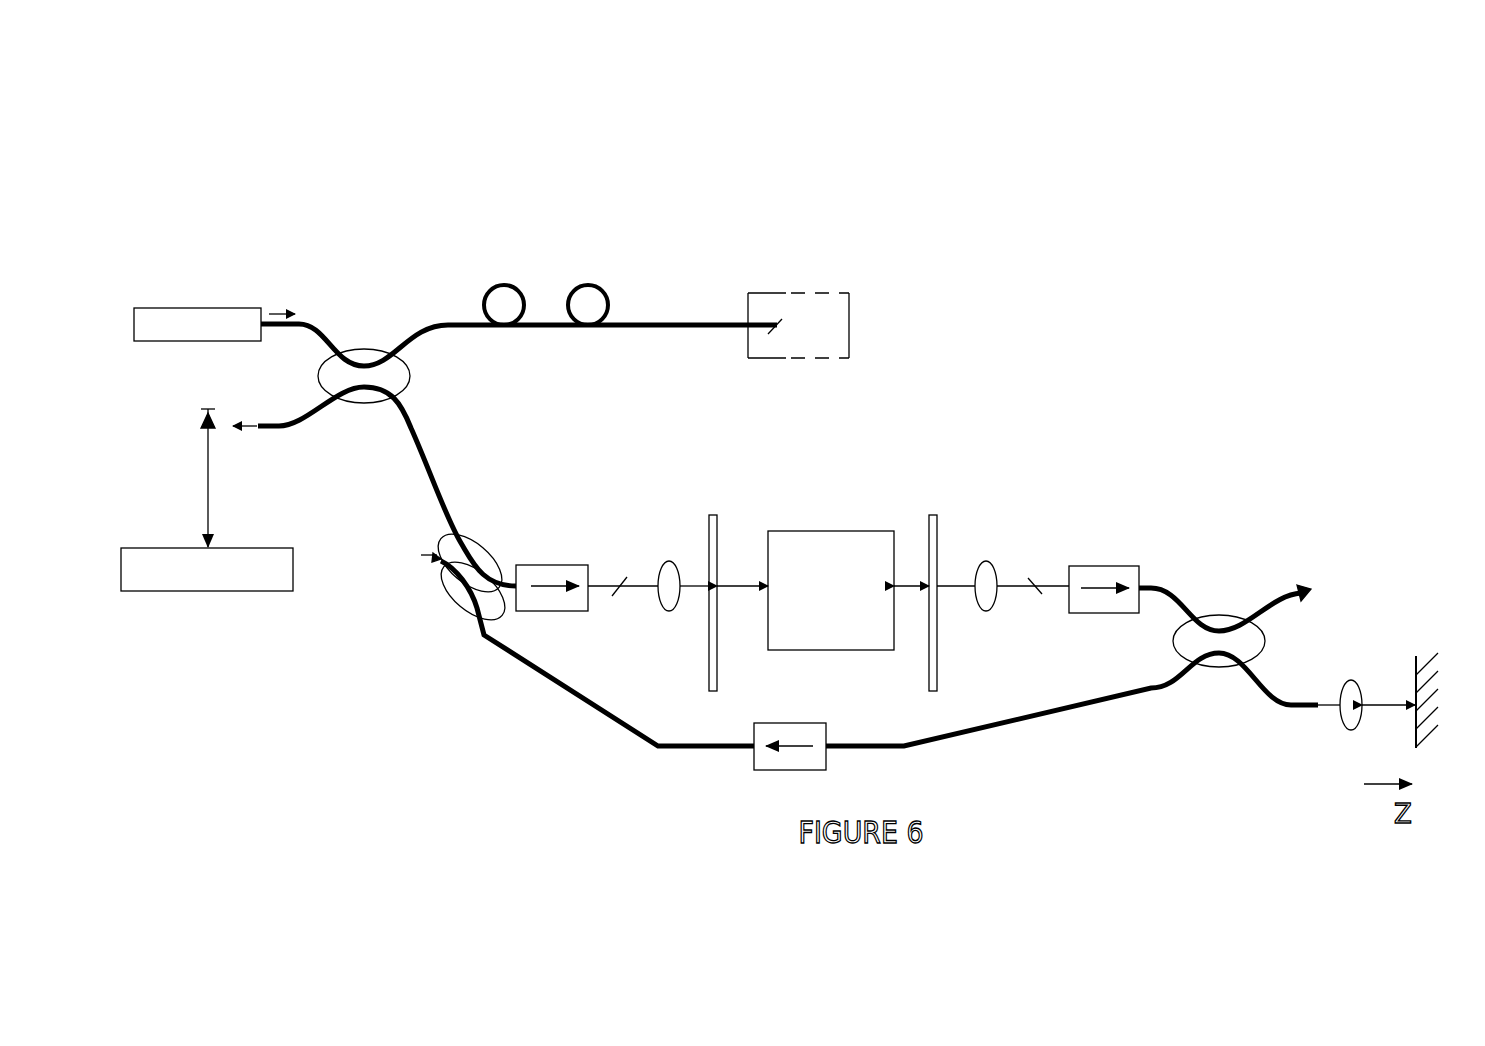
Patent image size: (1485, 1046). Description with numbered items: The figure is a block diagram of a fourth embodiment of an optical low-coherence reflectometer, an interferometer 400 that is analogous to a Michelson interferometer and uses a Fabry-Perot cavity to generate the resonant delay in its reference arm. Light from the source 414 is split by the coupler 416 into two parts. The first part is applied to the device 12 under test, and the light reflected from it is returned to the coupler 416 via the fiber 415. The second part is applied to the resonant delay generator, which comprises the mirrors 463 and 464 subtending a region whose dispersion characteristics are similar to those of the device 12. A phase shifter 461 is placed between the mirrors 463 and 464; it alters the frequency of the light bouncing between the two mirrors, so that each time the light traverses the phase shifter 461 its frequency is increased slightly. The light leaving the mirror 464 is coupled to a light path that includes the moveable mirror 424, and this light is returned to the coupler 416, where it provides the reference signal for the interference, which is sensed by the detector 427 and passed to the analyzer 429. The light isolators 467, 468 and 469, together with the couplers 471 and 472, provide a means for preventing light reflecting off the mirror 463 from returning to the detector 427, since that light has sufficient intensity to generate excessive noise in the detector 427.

The interferometer 400 is at (250, 195).
The source 414 is at (136, 312).
The coupler 416 is at (363, 360).
The fiber 415 is at (641, 320).
The device under test 12 is at (828, 340).
The detector 427 is at (197, 417).
The analyzer 429 is at (288, 585).
The coupler 471 is at (473, 533).
The light isolator 468 is at (562, 565).
The mirror 463 is at (712, 513).
The phase shifter 461 is at (817, 636).
The mirror 464 is at (937, 513).
The light isolator 469 is at (1122, 565).
The light isolator 467 is at (820, 728).
The coupler 472 is at (1218, 626).
The moveable mirror 424 is at (1415, 653).